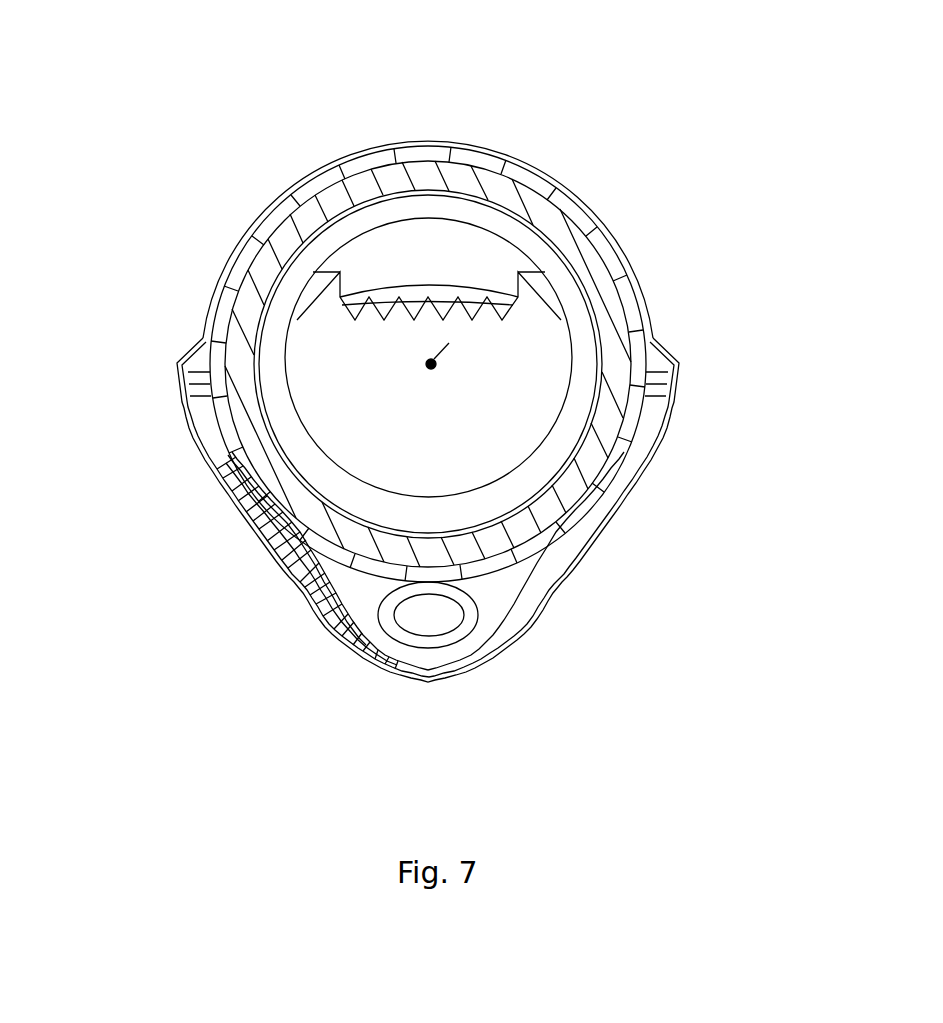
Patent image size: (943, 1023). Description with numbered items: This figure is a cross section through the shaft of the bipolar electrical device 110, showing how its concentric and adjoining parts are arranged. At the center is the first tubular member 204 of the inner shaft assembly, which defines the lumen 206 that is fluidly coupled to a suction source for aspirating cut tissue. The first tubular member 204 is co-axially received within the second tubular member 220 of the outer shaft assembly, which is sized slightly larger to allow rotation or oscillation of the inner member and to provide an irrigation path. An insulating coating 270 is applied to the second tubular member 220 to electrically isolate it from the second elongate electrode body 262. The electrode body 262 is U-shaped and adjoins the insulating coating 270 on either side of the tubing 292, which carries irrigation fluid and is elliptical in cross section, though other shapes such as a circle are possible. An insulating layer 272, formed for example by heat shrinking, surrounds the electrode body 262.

The bipolar electrical device 110 is at (835, 40).
The insulating layer 272 is at (175, 449).
The second tubular member 220 is at (251, 473).
The insulating coating 270 is at (285, 538).
The second elongate electrode body 262 is at (566, 568).
The first tubular member 204 is at (574, 455).
The lumen 206 is at (558, 367).
The tubing 292 is at (455, 658).